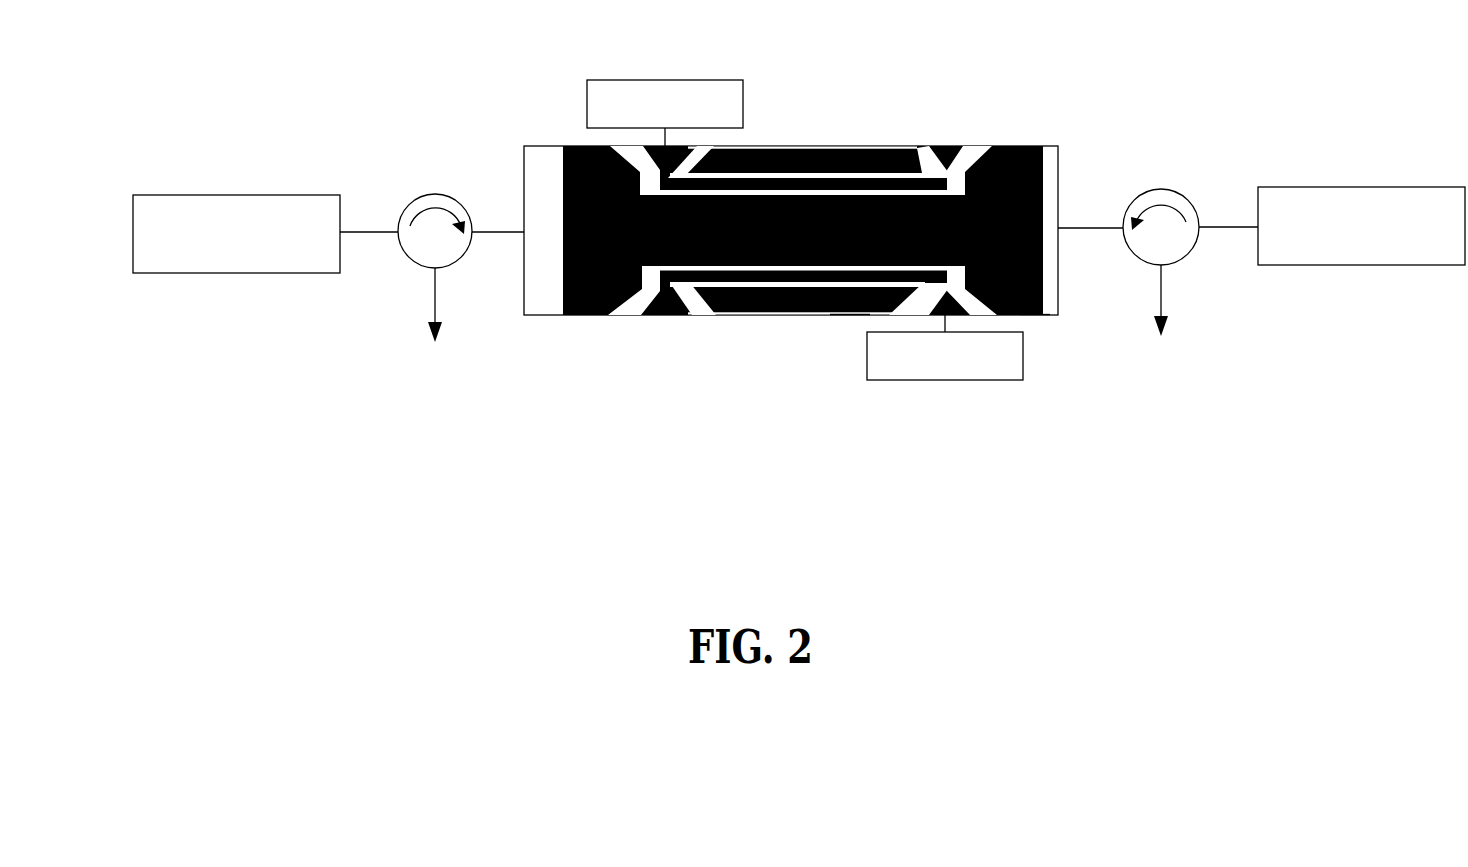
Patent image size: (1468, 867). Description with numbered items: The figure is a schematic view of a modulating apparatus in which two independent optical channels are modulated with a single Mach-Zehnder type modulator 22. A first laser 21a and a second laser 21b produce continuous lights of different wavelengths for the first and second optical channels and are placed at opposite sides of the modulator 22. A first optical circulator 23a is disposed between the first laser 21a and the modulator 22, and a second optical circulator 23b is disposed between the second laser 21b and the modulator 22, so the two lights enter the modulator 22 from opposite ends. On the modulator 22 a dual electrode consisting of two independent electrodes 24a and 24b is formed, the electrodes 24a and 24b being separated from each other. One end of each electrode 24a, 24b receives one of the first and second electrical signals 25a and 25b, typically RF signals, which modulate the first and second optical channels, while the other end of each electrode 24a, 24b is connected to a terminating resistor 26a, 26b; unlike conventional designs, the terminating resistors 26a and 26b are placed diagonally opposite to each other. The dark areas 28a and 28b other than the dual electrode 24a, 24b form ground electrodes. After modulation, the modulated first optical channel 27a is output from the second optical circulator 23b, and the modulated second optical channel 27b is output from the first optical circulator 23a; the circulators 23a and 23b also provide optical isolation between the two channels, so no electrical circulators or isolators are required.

The first laser 21a is at (265, 209).
The second laser 21b is at (1332, 201).
The Mach-Zehnder type modulator 22 is at (1060, 158).
The first optical circulator 23a is at (461, 207).
The second optical circulator 23b is at (1131, 201).
The first electrode 24a is at (667, 316).
The second electrode 24b is at (703, 146).
The first electrical signal 25a is at (662, 330).
The second electrical signal 25b is at (943, 130).
The first terminating resistor 26a is at (945, 353).
The second terminating resistor 26b is at (665, 110).
The modulated first optical channel 27a is at (1170, 327).
The modulated second optical channel 27b is at (437, 329).
The ground electrode 28a is at (848, 315).
The ground electrode 28b is at (1032, 313).